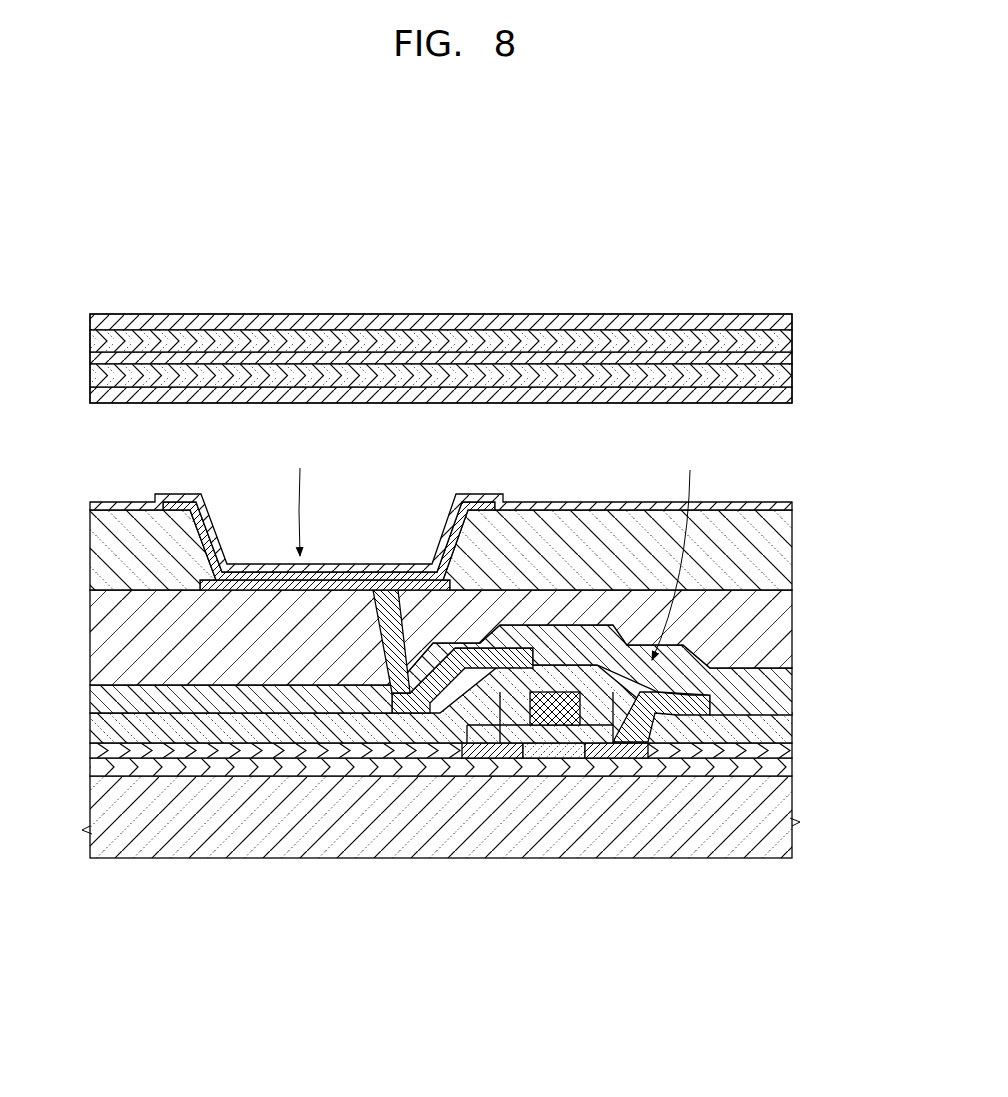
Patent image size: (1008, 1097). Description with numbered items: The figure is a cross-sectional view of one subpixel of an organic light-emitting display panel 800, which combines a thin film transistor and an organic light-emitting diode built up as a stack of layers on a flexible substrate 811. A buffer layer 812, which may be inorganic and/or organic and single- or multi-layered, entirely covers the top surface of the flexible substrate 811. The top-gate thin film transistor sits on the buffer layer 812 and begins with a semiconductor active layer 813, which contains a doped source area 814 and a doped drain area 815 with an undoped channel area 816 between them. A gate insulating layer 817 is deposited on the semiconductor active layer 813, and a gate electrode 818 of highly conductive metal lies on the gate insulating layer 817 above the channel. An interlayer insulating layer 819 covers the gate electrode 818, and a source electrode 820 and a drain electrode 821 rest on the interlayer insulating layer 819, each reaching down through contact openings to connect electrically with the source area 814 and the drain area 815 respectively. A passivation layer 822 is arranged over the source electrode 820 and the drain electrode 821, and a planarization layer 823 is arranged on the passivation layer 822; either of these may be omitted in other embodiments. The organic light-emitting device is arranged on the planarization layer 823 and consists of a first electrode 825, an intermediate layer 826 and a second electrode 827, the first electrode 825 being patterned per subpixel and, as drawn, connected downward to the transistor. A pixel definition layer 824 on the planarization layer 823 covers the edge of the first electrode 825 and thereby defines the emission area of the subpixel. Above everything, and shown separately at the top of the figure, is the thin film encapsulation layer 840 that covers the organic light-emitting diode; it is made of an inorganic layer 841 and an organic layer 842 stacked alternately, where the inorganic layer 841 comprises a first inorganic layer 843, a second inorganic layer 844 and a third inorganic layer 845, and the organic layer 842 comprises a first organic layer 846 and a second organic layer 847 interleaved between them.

The organic light-emitting display panel 800 is at (806, 249).
The flexible substrate 811 is at (792, 820).
The buffer layer 812 is at (792, 768).
The semiconductor active layer 813 is at (560, 855).
The source area 814 is at (488, 750).
The drain area 815 is at (615, 750).
The channel area 816 is at (555, 750).
The gate insulating layer 817 is at (792, 750).
The gate electrode 818 is at (552, 692).
The interlayer insulating layer 819 is at (792, 728).
The source electrode 820 is at (423, 700).
The drain electrode 821 is at (672, 735).
The passivation layer 822 is at (792, 690).
The planarization layer 823 is at (792, 630).
The pixel definition layer 824 is at (792, 550).
The first electrode 825 is at (253, 578).
The intermediate layer 826 is at (413, 574).
The second electrode 827 is at (792, 506).
The thin film encapsulation layer 840 is at (99, 300).
The inorganic layer 841 is at (690, 258).
The organic layer 842 is at (278, 258).
The first inorganic layer 843 is at (668, 395).
The second inorganic layer 844 is at (598, 358).
The third inorganic layer 845 is at (533, 322).
The first organic layer 846 is at (263, 373).
The second organic layer 847 is at (198, 341).